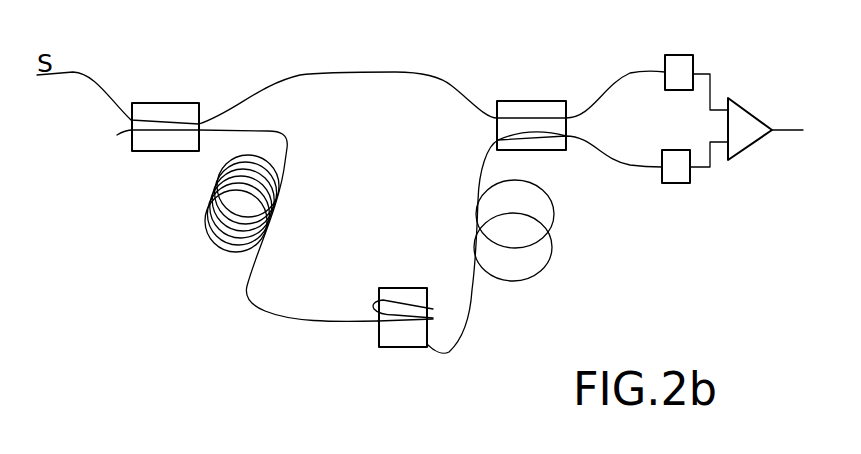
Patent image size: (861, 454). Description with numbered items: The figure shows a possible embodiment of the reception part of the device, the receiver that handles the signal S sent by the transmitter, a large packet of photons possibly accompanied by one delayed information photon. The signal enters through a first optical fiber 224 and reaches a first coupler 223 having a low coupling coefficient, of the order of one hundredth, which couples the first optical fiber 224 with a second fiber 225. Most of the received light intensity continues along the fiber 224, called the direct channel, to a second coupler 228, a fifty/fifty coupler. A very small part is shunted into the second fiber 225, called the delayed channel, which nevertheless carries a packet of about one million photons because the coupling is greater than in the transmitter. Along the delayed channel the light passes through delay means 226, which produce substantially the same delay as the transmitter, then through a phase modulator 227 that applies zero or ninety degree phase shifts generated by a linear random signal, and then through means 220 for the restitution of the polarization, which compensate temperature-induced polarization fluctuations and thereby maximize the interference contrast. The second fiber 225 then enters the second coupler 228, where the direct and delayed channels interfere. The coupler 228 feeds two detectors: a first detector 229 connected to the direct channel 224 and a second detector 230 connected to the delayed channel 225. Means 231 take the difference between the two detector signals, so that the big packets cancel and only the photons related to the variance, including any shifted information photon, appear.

The means for the restitution of the polarization 220 is at (553, 257).
The first coupler 223 is at (173, 152).
The first optical fiber 224 is at (73, 72).
The second fiber 225 is at (290, 140).
The delay means 226 is at (203, 225).
The phase modulator 227 is at (379, 347).
The second coupler 228 is at (540, 100).
The first detector 229 is at (692, 57).
The second detector 230 is at (688, 183).
The difference means 231 is at (752, 113).